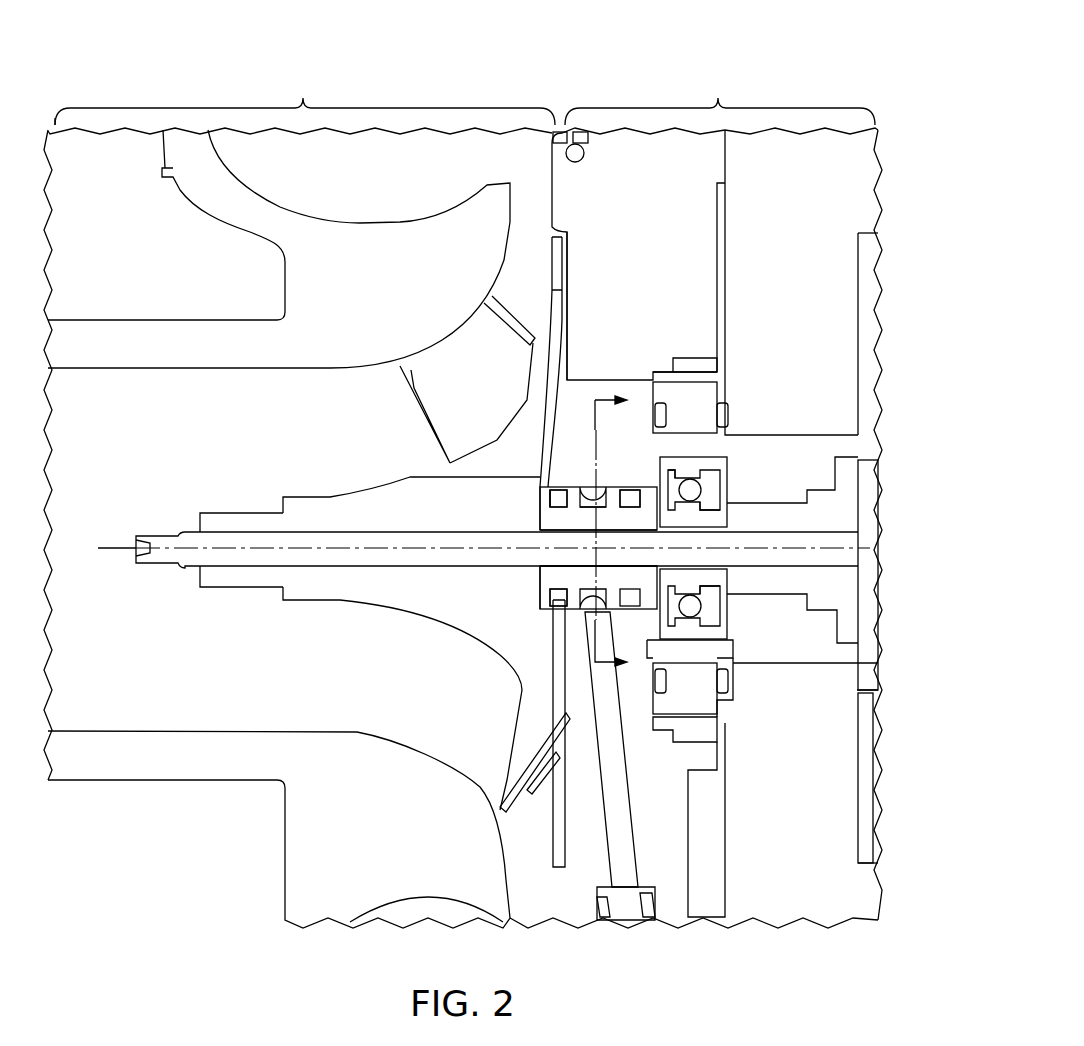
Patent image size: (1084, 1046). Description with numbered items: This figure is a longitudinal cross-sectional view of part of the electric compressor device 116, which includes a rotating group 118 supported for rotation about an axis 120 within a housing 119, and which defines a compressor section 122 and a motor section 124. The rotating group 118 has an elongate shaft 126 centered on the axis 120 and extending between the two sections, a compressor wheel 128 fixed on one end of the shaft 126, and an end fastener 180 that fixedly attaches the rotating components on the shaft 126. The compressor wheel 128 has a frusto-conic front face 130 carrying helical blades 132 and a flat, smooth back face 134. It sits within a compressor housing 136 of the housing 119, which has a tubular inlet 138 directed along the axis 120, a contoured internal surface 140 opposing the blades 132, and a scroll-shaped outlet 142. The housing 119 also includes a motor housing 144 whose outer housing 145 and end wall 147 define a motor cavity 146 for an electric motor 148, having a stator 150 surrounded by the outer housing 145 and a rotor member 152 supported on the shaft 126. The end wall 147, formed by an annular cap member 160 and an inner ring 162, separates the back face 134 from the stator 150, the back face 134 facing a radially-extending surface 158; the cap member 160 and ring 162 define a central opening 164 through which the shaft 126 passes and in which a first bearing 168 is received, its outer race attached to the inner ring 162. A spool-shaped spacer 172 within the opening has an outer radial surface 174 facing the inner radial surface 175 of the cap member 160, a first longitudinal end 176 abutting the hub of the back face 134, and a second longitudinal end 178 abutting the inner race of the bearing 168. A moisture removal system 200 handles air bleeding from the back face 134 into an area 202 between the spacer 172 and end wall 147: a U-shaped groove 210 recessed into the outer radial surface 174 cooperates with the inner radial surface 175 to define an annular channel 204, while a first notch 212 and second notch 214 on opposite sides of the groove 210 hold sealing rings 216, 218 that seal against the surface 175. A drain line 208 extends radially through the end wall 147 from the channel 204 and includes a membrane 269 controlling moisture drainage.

The second compressor device 116 is at (143, 88).
The rotating group 118 is at (415, 562).
The housing 119 is at (300, 870).
The axis 120 is at (118, 548).
The compressor section 122 is at (298, 498).
The motor section 124 is at (739, 508).
The elongate shaft 126 is at (166, 564).
The compressor wheel 128 is at (417, 478).
The front face 130 is at (510, 708).
The blades 132 is at (407, 472).
The back face 134 is at (567, 313).
The compressor housing 136 is at (190, 328).
The inlet 138 is at (100, 368).
The internal surface 140 is at (450, 333).
The outlet 142 is at (390, 143).
The motor housing 144 is at (819, 153).
The outer housing 145 is at (826, 231).
The motor cavity 146 is at (868, 236).
The end wall 147 is at (662, 231).
The electric motor 148 is at (868, 256).
The stator 150 is at (870, 292).
The rotor member 152 is at (872, 486).
The radially-extending surface 158 is at (553, 290).
The cap member 160 is at (718, 168).
The inner ring 162 is at (727, 386).
The central opening 164 is at (546, 585).
The first bearing 168 is at (695, 488).
The spacer 172 is at (541, 495).
The outer radial surface 174 is at (622, 490).
The inner radial surface 175 is at (605, 505).
The first longitudinal end 176 is at (540, 500).
The second longitudinal end 178 is at (712, 515).
The end fastener 180 is at (243, 513).
The moisture removal system 200 is at (555, 756).
The area 202 is at (556, 650).
The channel 204 is at (566, 520).
The drain line 208 is at (632, 818).
The groove 210 is at (660, 596).
The first notch 212 is at (565, 490).
The second notch 214 is at (670, 487).
The sealing ring 216 is at (565, 612).
The sealing ring 218 is at (705, 612).
The membrane 269 is at (652, 908).